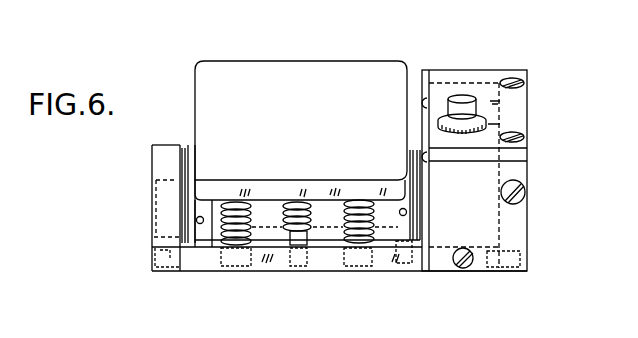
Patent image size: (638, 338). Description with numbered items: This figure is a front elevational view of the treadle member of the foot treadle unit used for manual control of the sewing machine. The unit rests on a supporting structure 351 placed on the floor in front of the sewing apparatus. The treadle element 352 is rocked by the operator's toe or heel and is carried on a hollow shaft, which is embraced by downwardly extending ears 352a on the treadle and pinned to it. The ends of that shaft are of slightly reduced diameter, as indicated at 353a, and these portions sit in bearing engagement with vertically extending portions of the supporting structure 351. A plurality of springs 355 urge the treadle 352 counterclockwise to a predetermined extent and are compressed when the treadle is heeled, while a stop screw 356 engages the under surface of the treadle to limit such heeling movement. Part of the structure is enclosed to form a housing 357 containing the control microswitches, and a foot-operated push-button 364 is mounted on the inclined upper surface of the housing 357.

The supporting structure 351 is at (160, 242).
The treadle element 352 is at (314, 66).
The ears 352a is at (205, 243).
The reduced diameter end portions 353a is at (178, 183).
The springs 355 is at (237, 205).
The stop screw 356 is at (295, 230).
The housing 357 is at (520, 108).
The push-button 364 is at (461, 97).